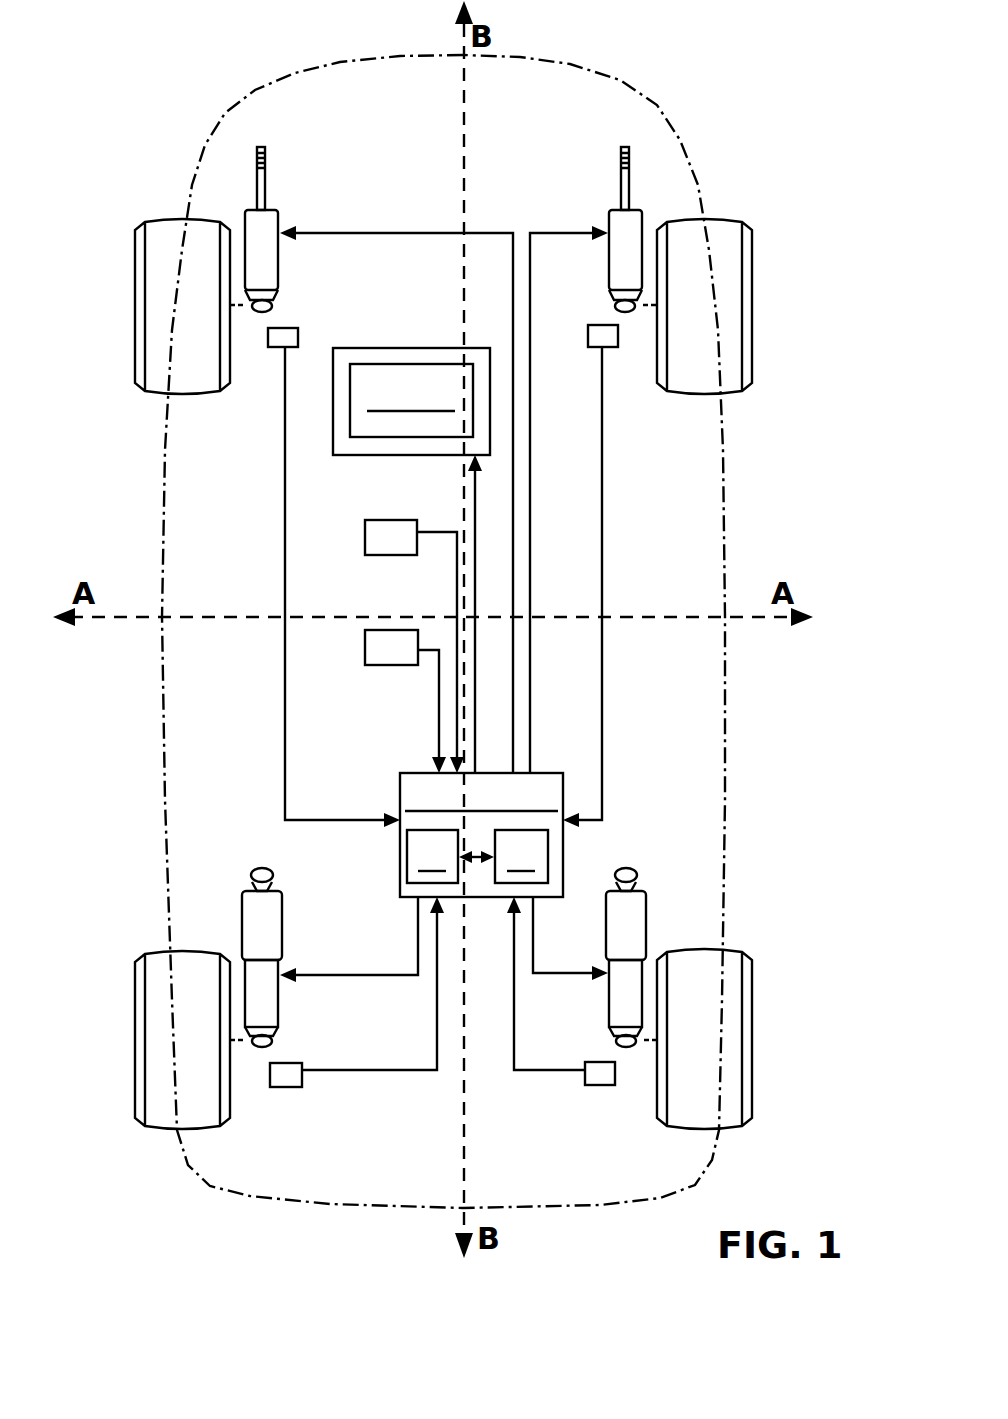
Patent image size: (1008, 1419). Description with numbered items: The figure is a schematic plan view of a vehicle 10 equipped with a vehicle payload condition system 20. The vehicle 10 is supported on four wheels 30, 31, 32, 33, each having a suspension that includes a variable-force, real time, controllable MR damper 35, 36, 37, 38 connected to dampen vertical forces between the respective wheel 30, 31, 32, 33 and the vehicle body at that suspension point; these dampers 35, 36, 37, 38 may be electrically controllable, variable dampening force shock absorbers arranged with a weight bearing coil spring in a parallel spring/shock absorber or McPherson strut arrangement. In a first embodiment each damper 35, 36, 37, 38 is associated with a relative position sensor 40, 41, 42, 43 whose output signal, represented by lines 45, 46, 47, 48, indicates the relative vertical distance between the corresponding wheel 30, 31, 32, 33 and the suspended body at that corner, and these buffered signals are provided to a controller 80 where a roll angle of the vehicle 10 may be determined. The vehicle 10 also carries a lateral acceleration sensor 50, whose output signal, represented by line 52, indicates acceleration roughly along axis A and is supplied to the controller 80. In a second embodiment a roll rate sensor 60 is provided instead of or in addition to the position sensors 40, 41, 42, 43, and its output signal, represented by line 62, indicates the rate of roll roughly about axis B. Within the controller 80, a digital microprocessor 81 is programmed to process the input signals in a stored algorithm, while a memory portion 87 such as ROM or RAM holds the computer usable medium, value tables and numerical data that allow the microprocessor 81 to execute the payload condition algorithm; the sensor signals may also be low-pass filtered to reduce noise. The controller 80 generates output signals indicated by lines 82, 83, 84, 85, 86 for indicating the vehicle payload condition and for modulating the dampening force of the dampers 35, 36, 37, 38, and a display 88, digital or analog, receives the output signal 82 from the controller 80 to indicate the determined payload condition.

The vehicle 10 is at (660, 98).
The vehicle payload condition system 20 is at (640, 791).
The wheel 30 is at (160, 232).
The wheel 31 is at (727, 232).
The wheel 32 is at (160, 1120).
The wheel 33 is at (725, 1115).
The MR damper 35 is at (273, 230).
The MR damper 36 is at (620, 226).
The MR damper 37 is at (255, 922).
The MR damper 38 is at (636, 937).
The relative position sensor 40 is at (265, 348).
The relative position sensor 41 is at (616, 348).
The relative position sensor 42 is at (300, 1087).
The relative position sensor 43 is at (587, 1086).
The output signal line 45 is at (285, 557).
The output signal line 46 is at (602, 555).
The output signal line 47 is at (390, 1071).
The output signal line 48 is at (525, 1071).
The lateral acceleration sensor 50 is at (366, 522).
The output signal line 52 is at (457, 572).
The roll rate sensor 60 is at (366, 661).
The output signal line 62 is at (437, 690).
The controller 80 is at (448, 823).
The digital microprocessor 81 is at (432, 856).
The output signal line 82 is at (478, 470).
The output signal line 83 is at (385, 231).
The output signal line 84 is at (560, 231).
The output signal line 85 is at (372, 972).
The output signal line 86 is at (538, 912).
The memory portion 87 is at (521, 856).
The display 88 is at (425, 347).